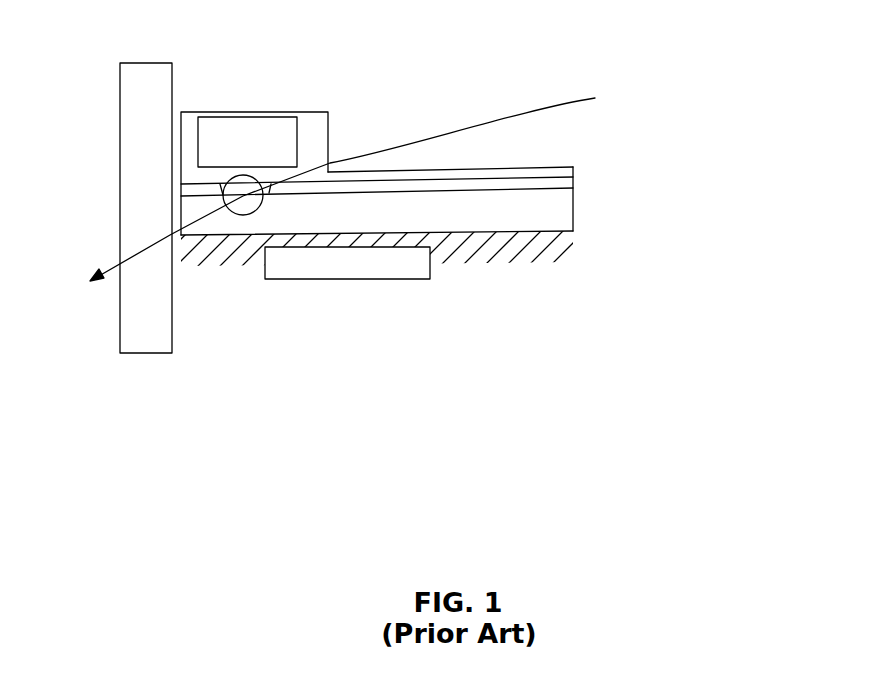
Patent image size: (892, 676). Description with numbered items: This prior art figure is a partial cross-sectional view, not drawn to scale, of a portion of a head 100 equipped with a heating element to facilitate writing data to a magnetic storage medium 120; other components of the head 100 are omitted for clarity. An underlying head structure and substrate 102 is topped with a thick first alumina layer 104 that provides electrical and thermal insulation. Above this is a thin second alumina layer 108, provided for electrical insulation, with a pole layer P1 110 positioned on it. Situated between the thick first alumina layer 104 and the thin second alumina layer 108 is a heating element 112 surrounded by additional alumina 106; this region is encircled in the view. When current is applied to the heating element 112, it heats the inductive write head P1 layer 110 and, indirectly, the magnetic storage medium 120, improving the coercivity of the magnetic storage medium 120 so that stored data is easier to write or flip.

The head 100 is at (318, 317).
The underlying head structure and substrate 102 is at (547, 259).
The first alumina layer 104 is at (560, 212).
The additional alumina 106 is at (573, 187).
The second alumina layer 108 is at (573, 167).
The pole layer P1 110 is at (237, 117).
The heating element 112 is at (339, 195).
The magnetic storage medium 120 is at (131, 185).